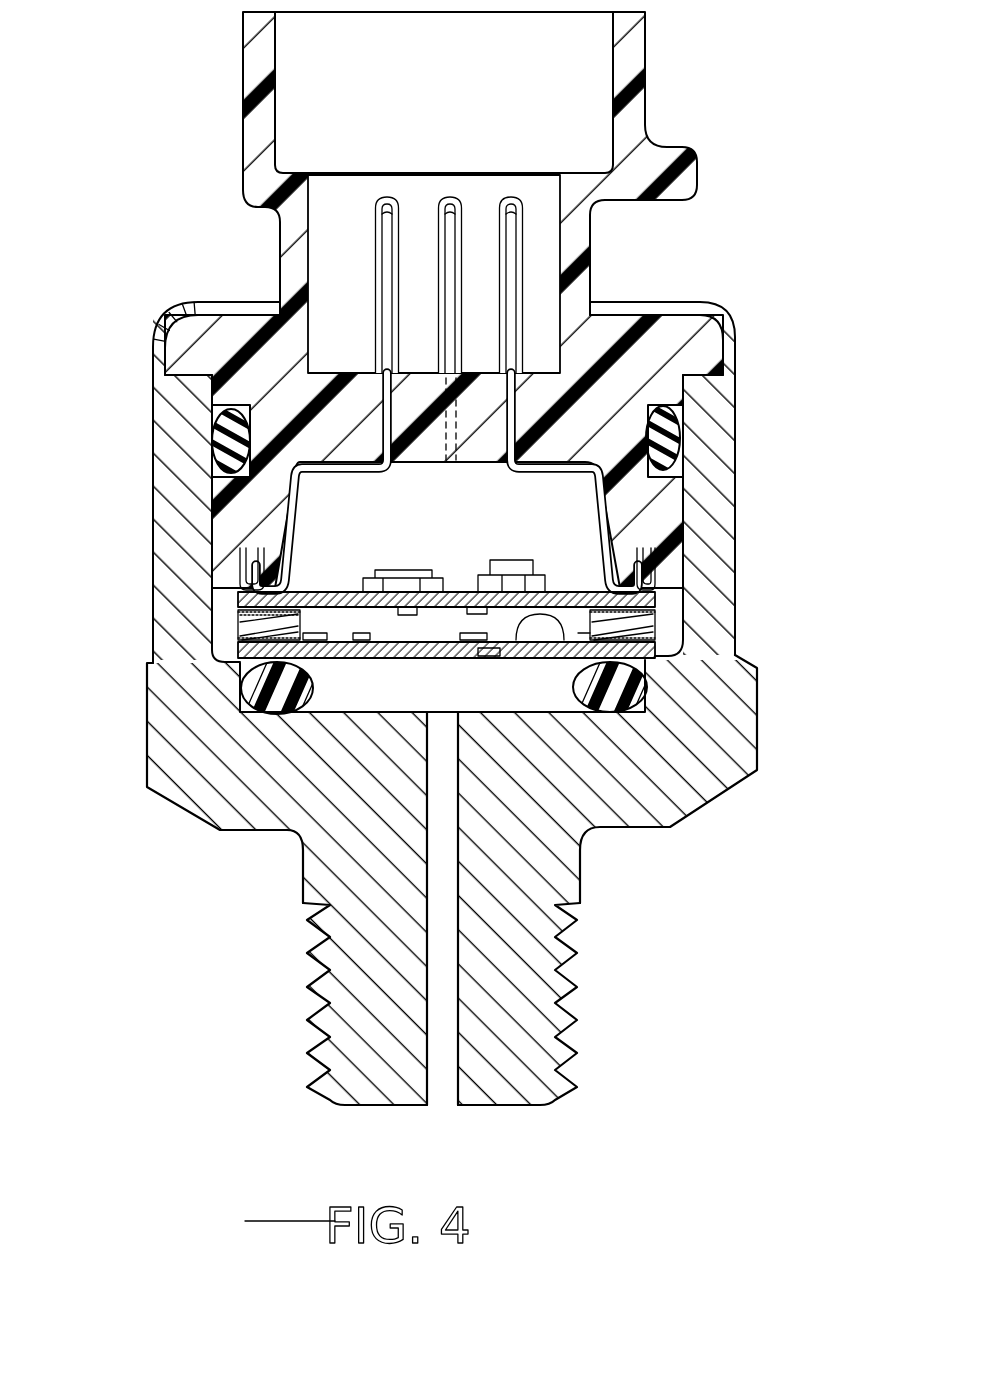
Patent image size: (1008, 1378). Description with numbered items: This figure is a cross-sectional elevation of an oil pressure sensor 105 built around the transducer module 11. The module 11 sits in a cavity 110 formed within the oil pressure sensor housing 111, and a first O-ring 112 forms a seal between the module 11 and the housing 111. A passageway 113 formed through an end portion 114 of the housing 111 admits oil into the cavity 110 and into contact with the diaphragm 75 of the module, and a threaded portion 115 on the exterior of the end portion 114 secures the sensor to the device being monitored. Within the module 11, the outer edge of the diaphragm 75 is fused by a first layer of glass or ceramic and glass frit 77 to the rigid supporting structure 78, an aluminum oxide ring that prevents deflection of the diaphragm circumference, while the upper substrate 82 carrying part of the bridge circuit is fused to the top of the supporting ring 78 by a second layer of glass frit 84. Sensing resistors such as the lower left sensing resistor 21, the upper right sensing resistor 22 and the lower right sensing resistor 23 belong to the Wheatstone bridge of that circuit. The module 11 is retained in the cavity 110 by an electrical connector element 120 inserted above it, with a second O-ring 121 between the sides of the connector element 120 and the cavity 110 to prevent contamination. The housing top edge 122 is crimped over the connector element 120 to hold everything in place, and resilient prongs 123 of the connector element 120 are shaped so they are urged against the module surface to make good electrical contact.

The oil pressure sensor 105 is at (716, 215).
The electrical connector element 120 is at (646, 85).
The top edge 122 is at (706, 298).
The second O-ring 121 is at (683, 436).
The resilient prongs 123 is at (297, 518).
The second layer of glass or glass and ceramic frit 84 is at (658, 598).
The upper substrate 82 is at (322, 600).
The transducer module 11 is at (433, 548).
The supporting structure 78 is at (643, 632).
The upper right sensing resistor 22 is at (295, 630).
The first layer of glass or ceramic and glass frit 77 is at (737, 682).
The lower left sensing resistor 21 is at (533, 644).
The lower right sensing resistor 23 is at (446, 669).
The diaphragm 75 is at (499, 658).
The cavity 110 is at (383, 704).
The oil pressure sensor housing 111 is at (752, 736).
The first O-ring 112 is at (620, 692).
The end portion 114 is at (360, 910).
The threaded portion 115 is at (582, 987).
The passageway 113 is at (441, 1093).